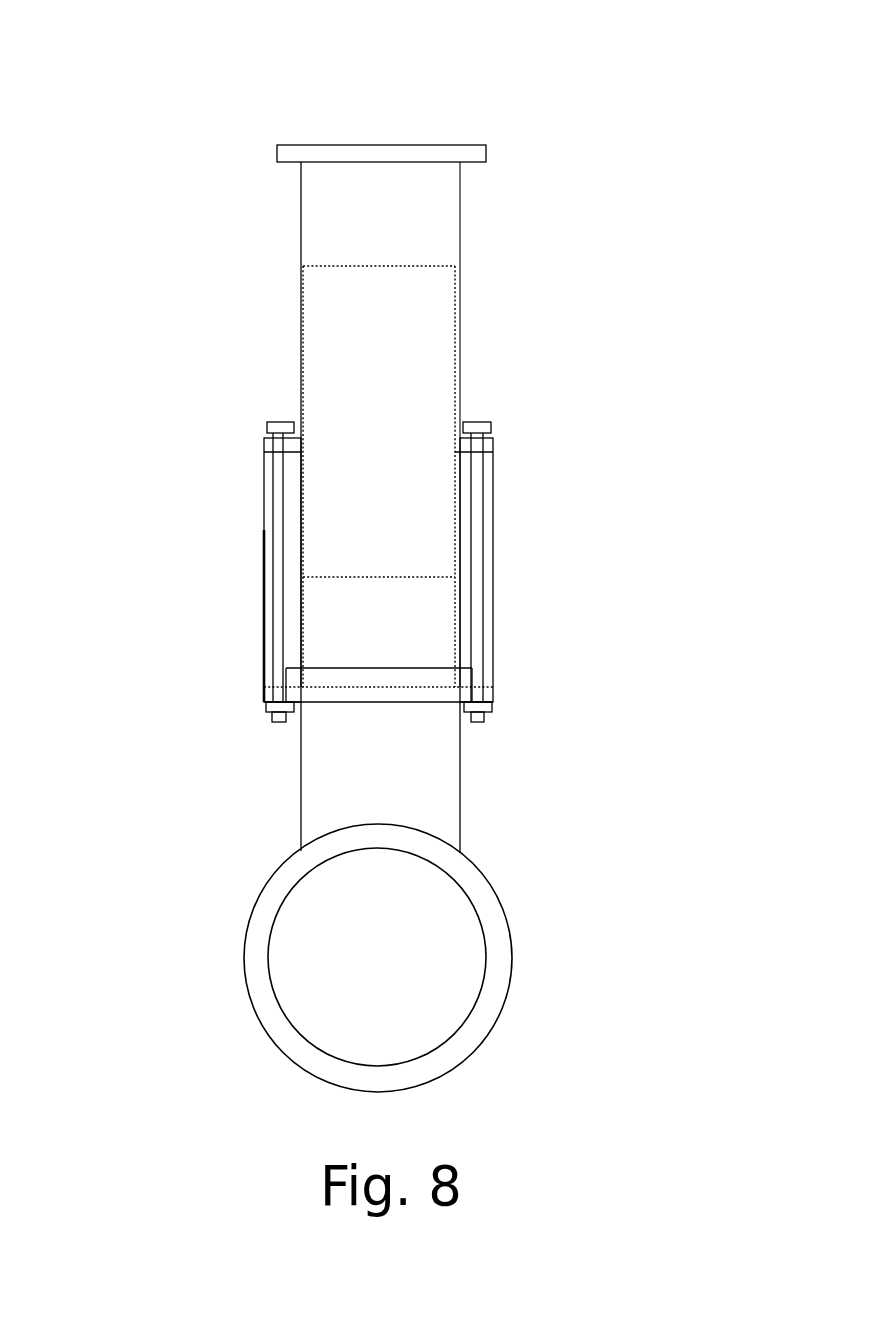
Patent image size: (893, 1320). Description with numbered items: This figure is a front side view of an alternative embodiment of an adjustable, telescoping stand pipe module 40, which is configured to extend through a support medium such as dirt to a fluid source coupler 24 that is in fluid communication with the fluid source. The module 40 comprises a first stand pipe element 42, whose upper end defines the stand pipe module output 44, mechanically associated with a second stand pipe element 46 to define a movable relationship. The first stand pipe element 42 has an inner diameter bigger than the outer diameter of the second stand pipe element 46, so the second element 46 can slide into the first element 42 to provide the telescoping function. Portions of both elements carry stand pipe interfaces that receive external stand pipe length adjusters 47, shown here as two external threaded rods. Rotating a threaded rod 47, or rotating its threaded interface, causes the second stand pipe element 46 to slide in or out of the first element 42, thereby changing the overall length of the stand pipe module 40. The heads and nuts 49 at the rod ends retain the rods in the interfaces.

The stand pipe module 40 is at (572, 172).
The stand pipe module output 44 is at (277, 152).
The first stand pipe element 42 is at (315, 224).
The stand pipe length adjuster 47 is at (264, 562).
The bolt 49 is at (263, 444).
The second stand pipe element 46 is at (300, 780).
The fluid source coupler 24 is at (255, 942).